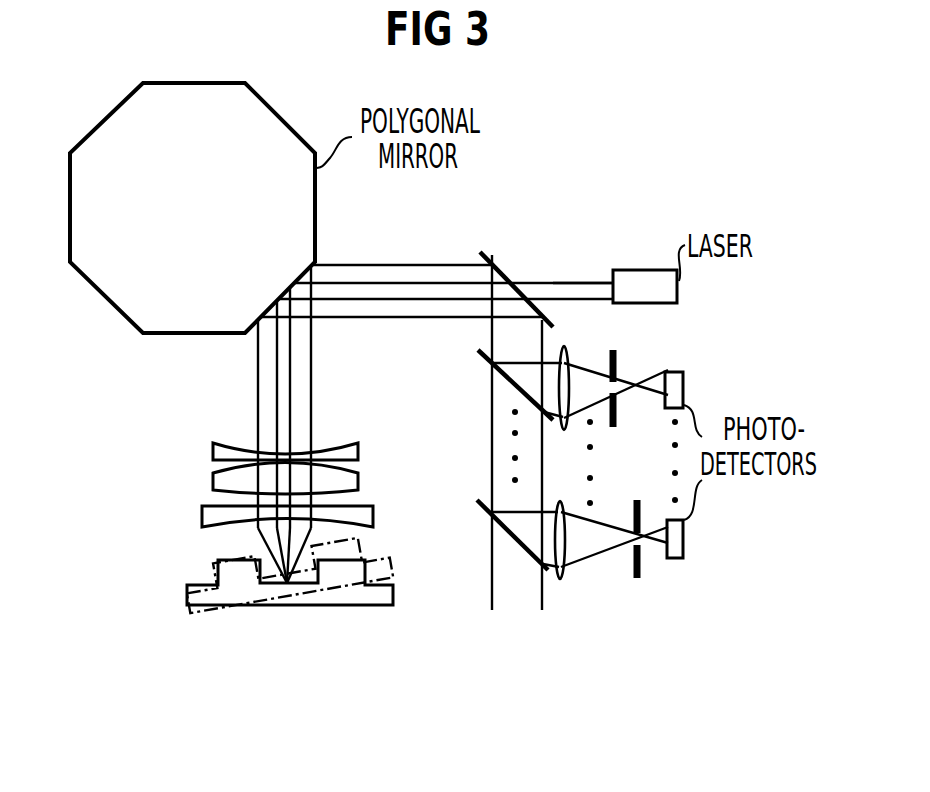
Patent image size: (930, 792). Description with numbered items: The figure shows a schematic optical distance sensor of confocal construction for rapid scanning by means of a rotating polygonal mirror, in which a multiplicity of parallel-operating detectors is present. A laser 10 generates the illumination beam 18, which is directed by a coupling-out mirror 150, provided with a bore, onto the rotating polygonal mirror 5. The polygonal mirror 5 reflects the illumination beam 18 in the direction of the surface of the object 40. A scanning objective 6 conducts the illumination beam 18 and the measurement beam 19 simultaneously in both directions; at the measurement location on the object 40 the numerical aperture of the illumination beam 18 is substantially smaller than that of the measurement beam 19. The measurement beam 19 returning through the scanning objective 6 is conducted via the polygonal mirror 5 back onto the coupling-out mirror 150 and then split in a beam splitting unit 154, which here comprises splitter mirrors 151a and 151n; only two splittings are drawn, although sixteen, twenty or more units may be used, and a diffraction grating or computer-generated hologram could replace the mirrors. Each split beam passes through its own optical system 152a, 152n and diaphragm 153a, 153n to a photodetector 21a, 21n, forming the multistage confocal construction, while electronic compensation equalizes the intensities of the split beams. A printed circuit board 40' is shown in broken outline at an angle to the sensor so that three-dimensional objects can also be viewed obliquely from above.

The rotating polygonal mirror 5 is at (273, 150).
The scanning objective 6 is at (200, 477).
The laser 10 is at (632, 283).
The illumination beam 18 is at (541, 282).
The measurement beam 19 is at (350, 320).
The photodetector 21a is at (684, 378).
The photodetector 21n is at (684, 541).
The object 40 is at (291, 604).
The printed circuit board 40' is at (264, 591).
The coupling-out mirror 150 is at (481, 249).
The splitter mirror 151a is at (477, 353).
The splitter mirror 151n is at (491, 512).
The optical system 152a is at (565, 347).
The optical system 152n is at (564, 576).
The diaphragm 153a is at (617, 352).
The diaphragm 153n is at (640, 580).
The beam splitting unit 154 is at (517, 598).